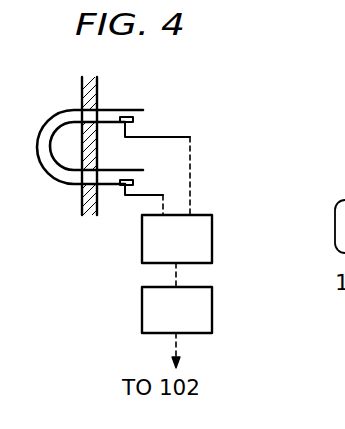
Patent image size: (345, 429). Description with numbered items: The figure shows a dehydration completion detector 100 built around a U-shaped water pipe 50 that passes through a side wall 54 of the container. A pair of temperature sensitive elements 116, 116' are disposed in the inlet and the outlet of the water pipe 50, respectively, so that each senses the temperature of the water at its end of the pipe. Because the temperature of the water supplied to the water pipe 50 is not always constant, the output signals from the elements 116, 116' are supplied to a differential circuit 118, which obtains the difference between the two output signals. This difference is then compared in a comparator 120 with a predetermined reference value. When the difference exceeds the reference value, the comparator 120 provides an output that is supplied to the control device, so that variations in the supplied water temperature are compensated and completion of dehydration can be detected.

The detector 100 is at (112, 222).
The side wall 54 is at (85, 88).
The water pipe 50 is at (41, 157).
The temperature sensitive element 116 is at (155, 161).
The temperature sensitive element 116' is at (151, 187).
The differential circuit 118 is at (212, 240).
The comparator 120 is at (212, 307).